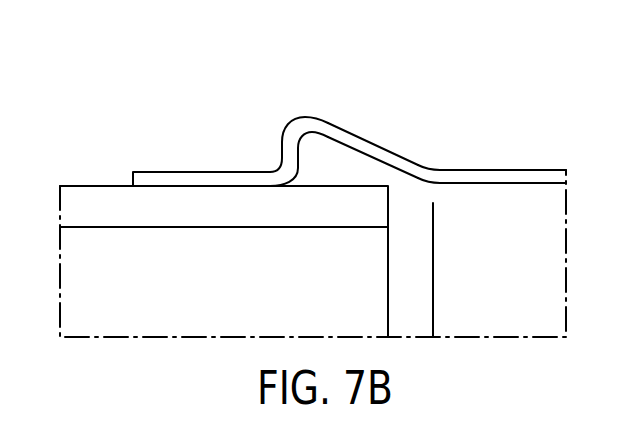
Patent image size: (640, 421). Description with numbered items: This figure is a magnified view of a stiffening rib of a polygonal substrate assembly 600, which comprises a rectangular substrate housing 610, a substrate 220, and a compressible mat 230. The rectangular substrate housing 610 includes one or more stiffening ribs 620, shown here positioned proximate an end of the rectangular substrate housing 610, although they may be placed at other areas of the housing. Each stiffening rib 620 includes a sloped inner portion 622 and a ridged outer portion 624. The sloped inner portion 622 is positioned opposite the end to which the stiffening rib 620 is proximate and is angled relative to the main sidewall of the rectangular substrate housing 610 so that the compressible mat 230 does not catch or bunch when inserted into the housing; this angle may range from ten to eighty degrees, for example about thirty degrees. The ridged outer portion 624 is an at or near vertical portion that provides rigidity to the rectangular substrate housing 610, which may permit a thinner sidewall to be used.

The polygonal substrate assembly 600 is at (582, 173).
The substrate 220 is at (243, 294).
The compressible mat 230 is at (193, 197).
The stiffening rib 620 is at (436, 77).
The ridged outer portion 624 is at (300, 116).
The sloped inner portion 622 is at (376, 137).
The rectangular substrate housing 610 is at (458, 168).